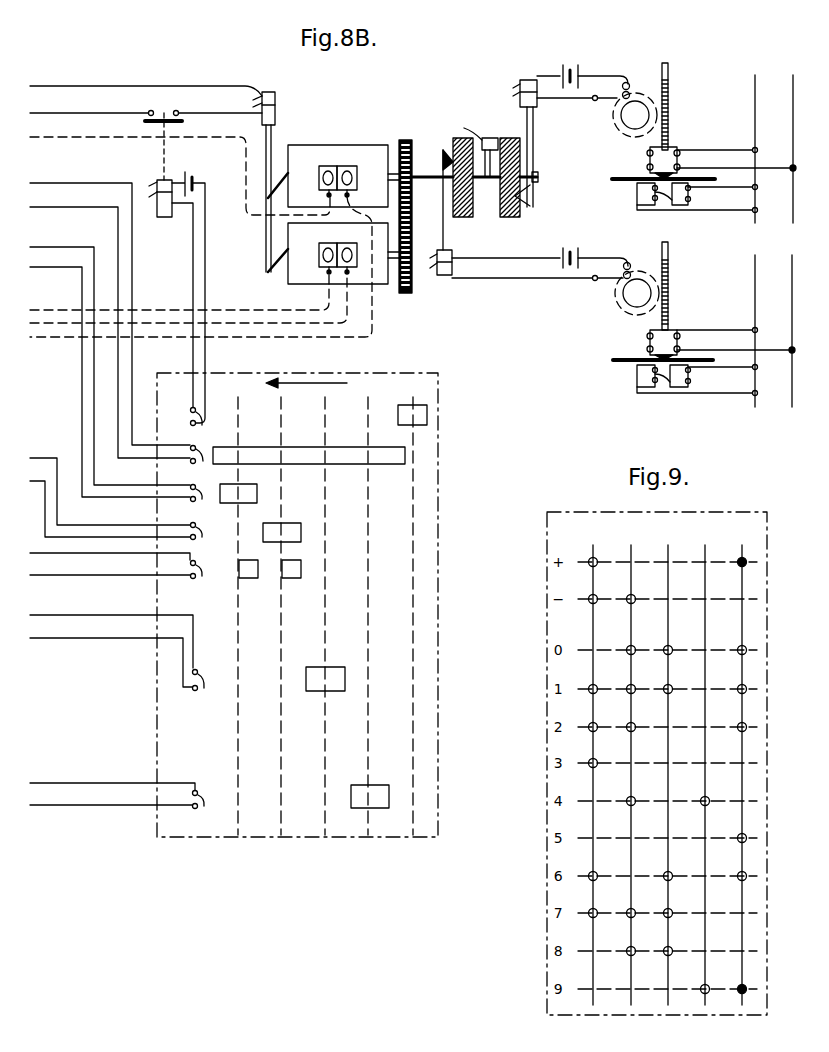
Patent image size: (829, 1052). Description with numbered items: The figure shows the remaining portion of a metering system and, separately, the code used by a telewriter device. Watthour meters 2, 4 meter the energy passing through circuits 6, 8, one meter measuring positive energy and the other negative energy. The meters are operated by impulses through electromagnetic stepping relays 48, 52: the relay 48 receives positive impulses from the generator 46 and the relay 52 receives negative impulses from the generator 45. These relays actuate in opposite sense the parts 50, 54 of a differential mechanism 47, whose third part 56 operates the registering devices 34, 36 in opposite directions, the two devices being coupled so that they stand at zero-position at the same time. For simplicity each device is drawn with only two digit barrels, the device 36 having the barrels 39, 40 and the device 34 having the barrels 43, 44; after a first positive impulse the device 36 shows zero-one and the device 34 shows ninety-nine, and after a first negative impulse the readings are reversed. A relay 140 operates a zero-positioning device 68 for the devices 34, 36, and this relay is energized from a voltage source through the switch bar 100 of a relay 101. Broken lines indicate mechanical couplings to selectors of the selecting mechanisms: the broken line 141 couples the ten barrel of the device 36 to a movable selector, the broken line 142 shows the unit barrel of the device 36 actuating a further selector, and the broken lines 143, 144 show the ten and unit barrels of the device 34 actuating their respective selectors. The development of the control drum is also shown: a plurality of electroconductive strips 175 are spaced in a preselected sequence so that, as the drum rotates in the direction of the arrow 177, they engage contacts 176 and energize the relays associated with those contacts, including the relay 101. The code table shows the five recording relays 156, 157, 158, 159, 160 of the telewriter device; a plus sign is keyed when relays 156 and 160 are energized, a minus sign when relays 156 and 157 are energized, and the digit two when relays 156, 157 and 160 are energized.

In FIG. 8B, the watthour meter 2 is at (714, 116).
In FIG. 8B, the watthour meter 4 is at (714, 300).
In FIG. 8B, the circuit 6 is at (782, 135).
In FIG. 8B, the circuit 8 is at (779, 315).
In FIG. 8B, the registering device 34 is at (376, 284).
In FIG. 8B, the registering device 36 is at (389, 146).
In FIG. 8B, the barrel 39 is at (327, 172).
In FIG. 8B, the barrel 40 is at (347, 172).
In FIG. 8B, the barrel 43 is at (327, 249).
In FIG. 8B, the barrel 44 is at (347, 249).
In FIG. 8B, the generator 45 is at (652, 70).
In FIG. 8B, the generator 46 is at (602, 308).
In FIG. 8B, the differential mechanism 47 is at (497, 120).
In FIG. 8B, the electromagnetic stepping relay 48 is at (458, 305).
In FIG. 8B, the part of differential mechanism 50 is at (466, 217).
In FIG. 8B, the electromagnetic stepping relay 52 is at (527, 71).
In FIG. 8B, the part of differential mechanism 54 is at (512, 217).
In FIG. 8B, the third part of differential mechanism 56 is at (462, 130).
In FIG. 8B, the zero-positioning device 68 is at (258, 262).
In FIG. 8B, the switch bar 100 is at (146, 137).
In FIG. 8B, the relay 101 is at (175, 239).
In FIG. 8B, the relay 140 is at (315, 112).
In FIG. 8B, the broken line 141 is at (38, 137).
In FIG. 8B, the broken line 142 is at (36, 337).
In FIG. 8B, the broken line 143 is at (36, 310).
In FIG. 8B, the broken line 144 is at (147, 325).
In FIG. 9, the recording relay 156 is at (582, 543).
In FIG. 9, the recording relay 157 is at (620, 543).
In FIG. 9, the recording relay 158 is at (657, 543).
In FIG. 9, the recording relay 159 is at (694, 543).
In FIG. 9, the recording relay 160 is at (731, 543).
In FIG. 8B, the electroconductive strip 175 is at (392, 446).
In FIG. 8B, the contact 176 is at (210, 608).
In FIG. 8B, the arrow 177 is at (330, 383).